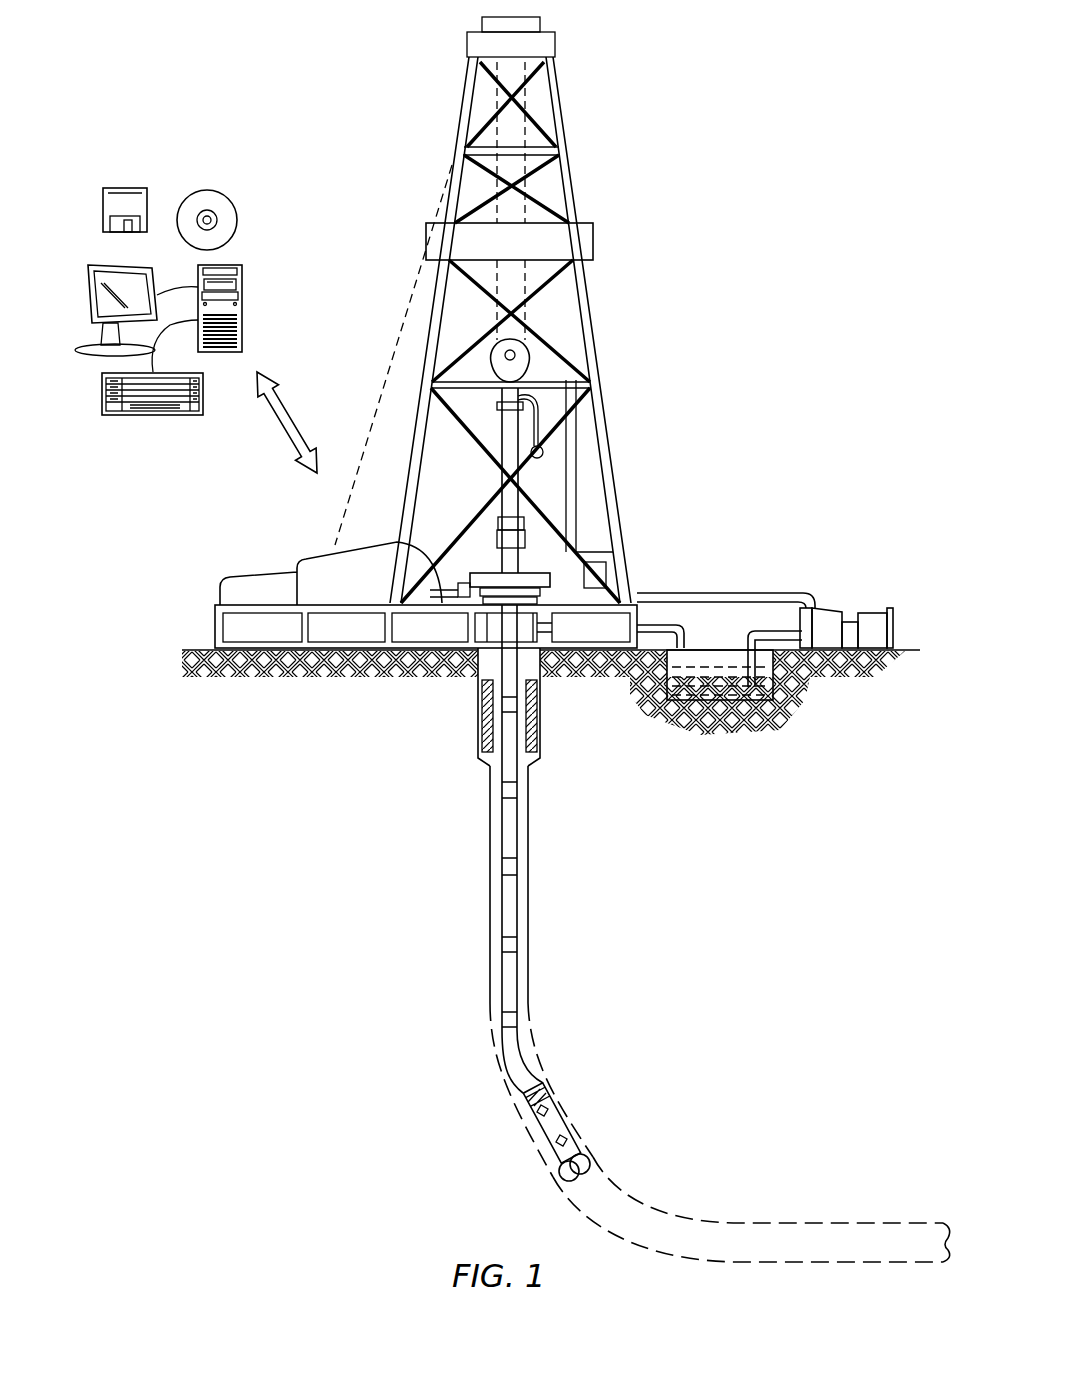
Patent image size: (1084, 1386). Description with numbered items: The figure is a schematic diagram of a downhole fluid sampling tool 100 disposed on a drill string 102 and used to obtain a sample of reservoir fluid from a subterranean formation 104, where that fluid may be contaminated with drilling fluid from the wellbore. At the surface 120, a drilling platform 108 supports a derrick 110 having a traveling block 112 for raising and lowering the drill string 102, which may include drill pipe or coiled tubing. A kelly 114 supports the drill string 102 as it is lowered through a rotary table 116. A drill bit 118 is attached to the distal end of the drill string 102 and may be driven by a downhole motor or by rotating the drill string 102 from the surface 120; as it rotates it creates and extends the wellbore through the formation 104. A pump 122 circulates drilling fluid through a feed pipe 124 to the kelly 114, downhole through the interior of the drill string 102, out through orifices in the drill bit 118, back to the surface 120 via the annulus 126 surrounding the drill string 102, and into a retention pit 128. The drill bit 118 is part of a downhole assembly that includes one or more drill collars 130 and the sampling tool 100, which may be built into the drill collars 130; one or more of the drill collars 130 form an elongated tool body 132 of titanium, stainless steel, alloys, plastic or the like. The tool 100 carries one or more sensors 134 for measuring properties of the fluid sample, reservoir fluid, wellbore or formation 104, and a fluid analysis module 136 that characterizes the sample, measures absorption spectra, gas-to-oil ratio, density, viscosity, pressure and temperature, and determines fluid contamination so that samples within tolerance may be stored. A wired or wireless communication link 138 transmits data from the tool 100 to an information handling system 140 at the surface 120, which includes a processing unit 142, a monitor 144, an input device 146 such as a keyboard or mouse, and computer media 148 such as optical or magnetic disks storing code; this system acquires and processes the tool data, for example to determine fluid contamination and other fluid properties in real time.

The downhole fluid sampling tool 100 is at (508, 1115).
The drill string 102 is at (518, 845).
The subterranean formation 104 is at (798, 1010).
The drilling platform 108 is at (215, 628).
The derrick 110 is at (560, 145).
The traveling block 112 is at (532, 360).
The kelly 114 is at (513, 430).
The rotary table 116 is at (530, 573).
The drill bit 118 is at (595, 1157).
The surface 120 is at (905, 648).
The pump 122 is at (817, 608).
The feed pipe 124 is at (740, 593).
The annulus 126 is at (493, 803).
The retention pit 128 is at (725, 692).
The drill collars 130 is at (556, 1158).
The tool body 132 is at (547, 1100).
The sensors 134 is at (575, 1133).
The fluid analysis module 136 is at (548, 1137).
The communication link 138 is at (292, 407).
The information handling system 140 is at (210, 290).
The processing unit 142 is at (242, 287).
The monitor 144 is at (87, 272).
The input device 146 is at (142, 415).
The computer media 148 is at (123, 187).